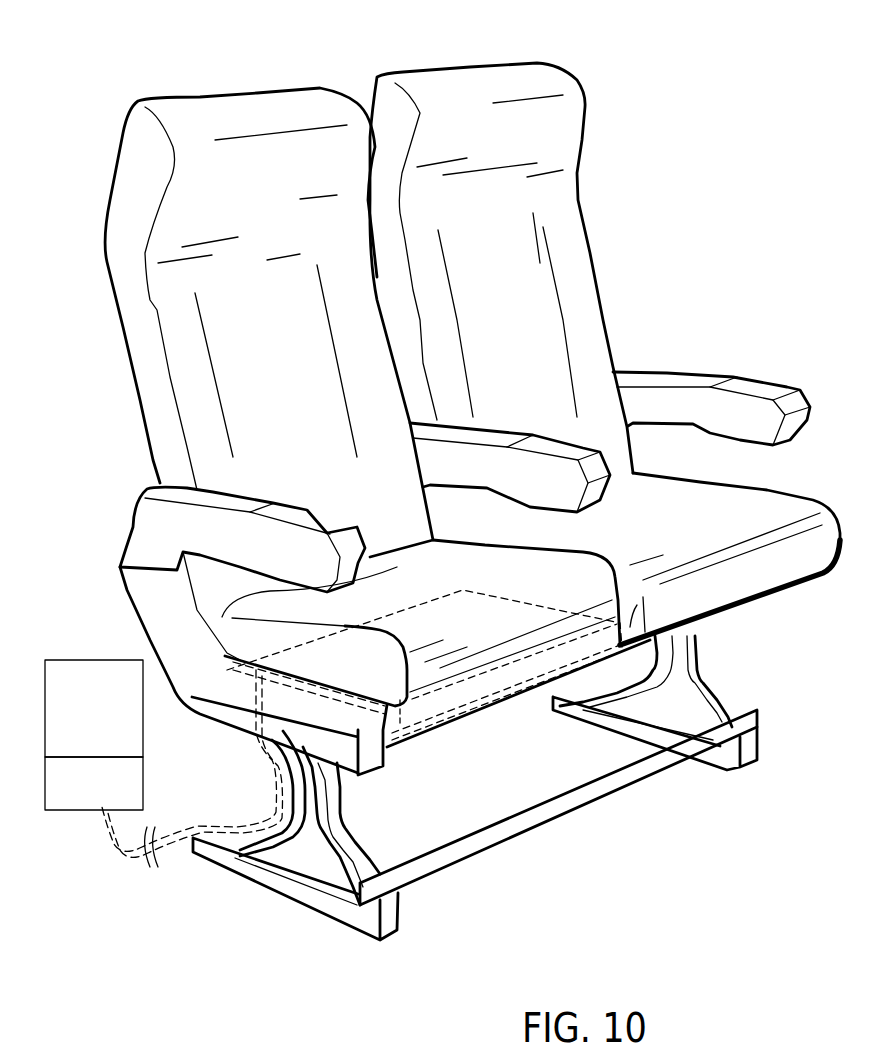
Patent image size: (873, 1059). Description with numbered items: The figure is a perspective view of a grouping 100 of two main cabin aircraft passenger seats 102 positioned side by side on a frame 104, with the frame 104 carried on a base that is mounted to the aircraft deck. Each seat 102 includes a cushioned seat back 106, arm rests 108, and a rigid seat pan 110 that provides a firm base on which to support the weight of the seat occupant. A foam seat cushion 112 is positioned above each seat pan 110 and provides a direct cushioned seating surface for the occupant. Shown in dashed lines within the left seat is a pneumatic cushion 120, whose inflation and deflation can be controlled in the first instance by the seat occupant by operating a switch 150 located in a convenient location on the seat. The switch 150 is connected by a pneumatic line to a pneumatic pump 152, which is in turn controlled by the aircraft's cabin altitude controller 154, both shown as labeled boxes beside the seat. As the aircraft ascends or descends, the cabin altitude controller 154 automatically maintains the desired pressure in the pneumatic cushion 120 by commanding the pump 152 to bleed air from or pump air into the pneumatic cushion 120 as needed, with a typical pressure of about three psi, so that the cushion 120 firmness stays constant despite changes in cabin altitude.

The grouping of aircraft passenger seats 100 is at (654, 178).
The aircraft passenger seat 102 is at (134, 102).
The frame 104 is at (128, 590).
The cushioned seat back 106 is at (140, 317).
The arm rest 108 is at (148, 520).
The rigid seat pan 110 is at (740, 613).
The foam seat cushion 112 is at (397, 567).
The pneumatic cushion 120 is at (455, 695).
The switch 150 is at (260, 673).
The pneumatic pump 152 is at (77, 808).
The aircraft cabin altitude controller 154 is at (80, 662).